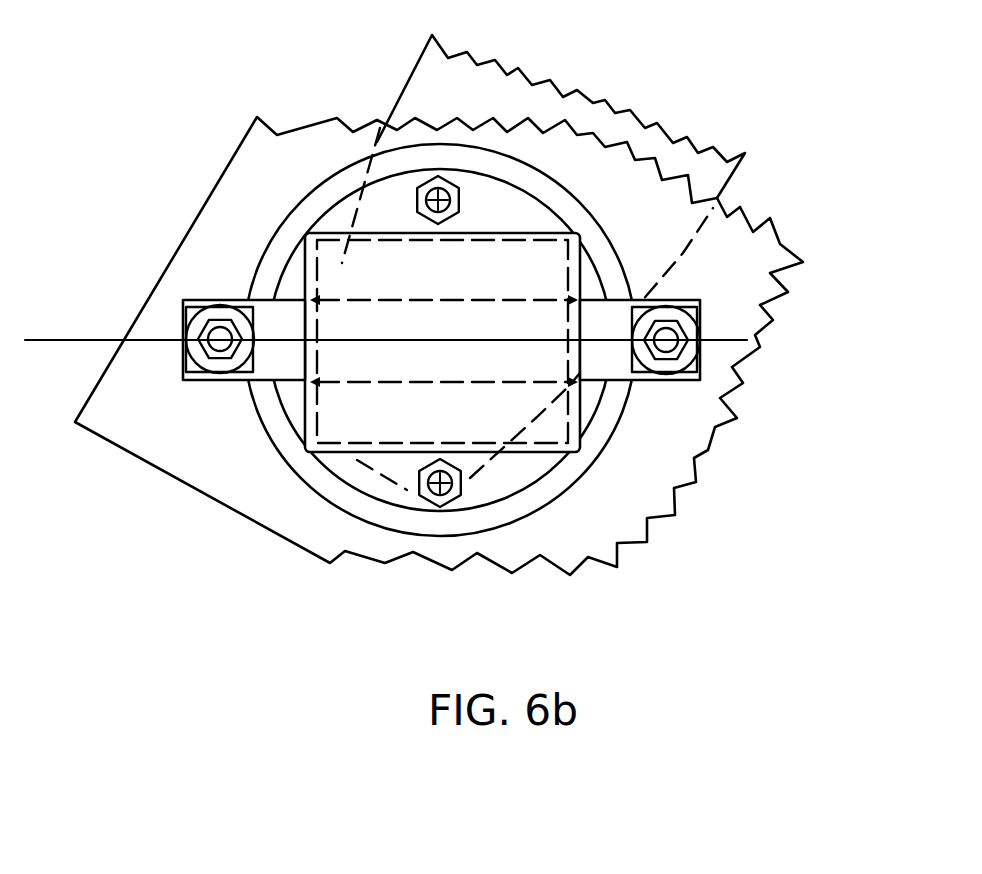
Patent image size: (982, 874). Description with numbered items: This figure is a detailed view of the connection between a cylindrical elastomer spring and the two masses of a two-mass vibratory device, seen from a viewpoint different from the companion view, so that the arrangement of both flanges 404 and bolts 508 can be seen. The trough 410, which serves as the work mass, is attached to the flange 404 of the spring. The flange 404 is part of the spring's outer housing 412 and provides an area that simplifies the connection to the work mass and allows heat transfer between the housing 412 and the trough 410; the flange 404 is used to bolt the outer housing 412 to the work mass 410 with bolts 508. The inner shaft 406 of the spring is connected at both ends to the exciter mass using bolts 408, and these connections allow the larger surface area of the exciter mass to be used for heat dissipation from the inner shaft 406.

The flange 404 is at (510, 455).
The inner shaft 406 is at (277, 353).
The bolts 408 is at (200, 322).
The trough 410 is at (713, 173).
The outer housing 412 is at (335, 263).
The bolts 508 is at (435, 500).